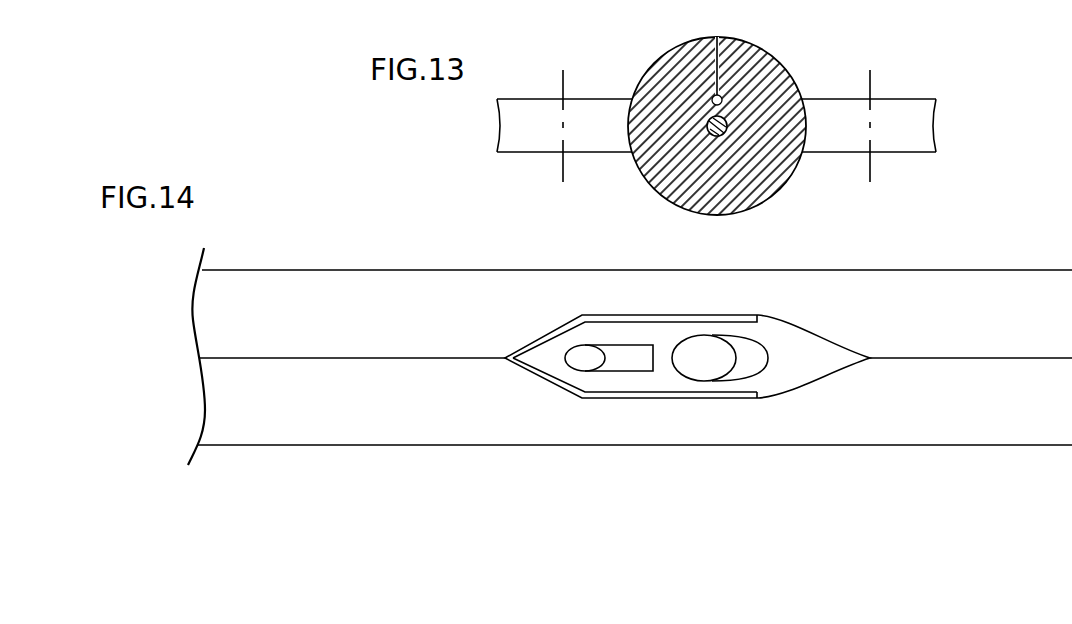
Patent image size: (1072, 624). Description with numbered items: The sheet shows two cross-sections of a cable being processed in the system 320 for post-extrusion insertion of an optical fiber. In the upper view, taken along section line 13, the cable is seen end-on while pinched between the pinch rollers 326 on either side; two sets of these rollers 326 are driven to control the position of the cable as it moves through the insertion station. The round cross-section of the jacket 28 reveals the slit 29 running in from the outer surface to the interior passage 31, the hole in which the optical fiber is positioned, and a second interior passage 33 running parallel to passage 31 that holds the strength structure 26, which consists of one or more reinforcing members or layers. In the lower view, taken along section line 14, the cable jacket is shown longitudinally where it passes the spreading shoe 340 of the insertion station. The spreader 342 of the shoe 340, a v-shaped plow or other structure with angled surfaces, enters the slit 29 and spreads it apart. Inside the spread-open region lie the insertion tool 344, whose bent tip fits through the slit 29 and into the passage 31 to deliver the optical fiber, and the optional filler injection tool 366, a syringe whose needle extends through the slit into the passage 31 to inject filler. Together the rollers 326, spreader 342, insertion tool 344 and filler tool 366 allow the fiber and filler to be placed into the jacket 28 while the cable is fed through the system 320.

In FIG. 13, the section line 13 is at (518, 0).
In FIG. 13, the section line 14 is at (753, 91).
In FIG. 13, the strength structure 26 is at (703, 150).
In FIG. 13, the jacket 28 is at (796, 170).
In FIG. 13, the slit 29 is at (722, 47).
In FIG. 14, the slit 29 is at (506, 356).
In FIG. 13, the interior passage 31 is at (740, 90).
In FIG. 14, the interior passage 31 is at (667, 333).
In FIG. 13, the interior passage 33 is at (712, 136).
In FIG. 13, the system 320 is at (464, 5).
In FIG. 13, the pinch rollers 326 is at (585, 97).
In FIG. 14, the spreading shoe 340 is at (605, 410).
In FIG. 14, the spreader 342 is at (540, 378).
In FIG. 14, the insertion tool 344 is at (624, 352).
In FIG. 14, the filler injection tool 366 is at (706, 383).